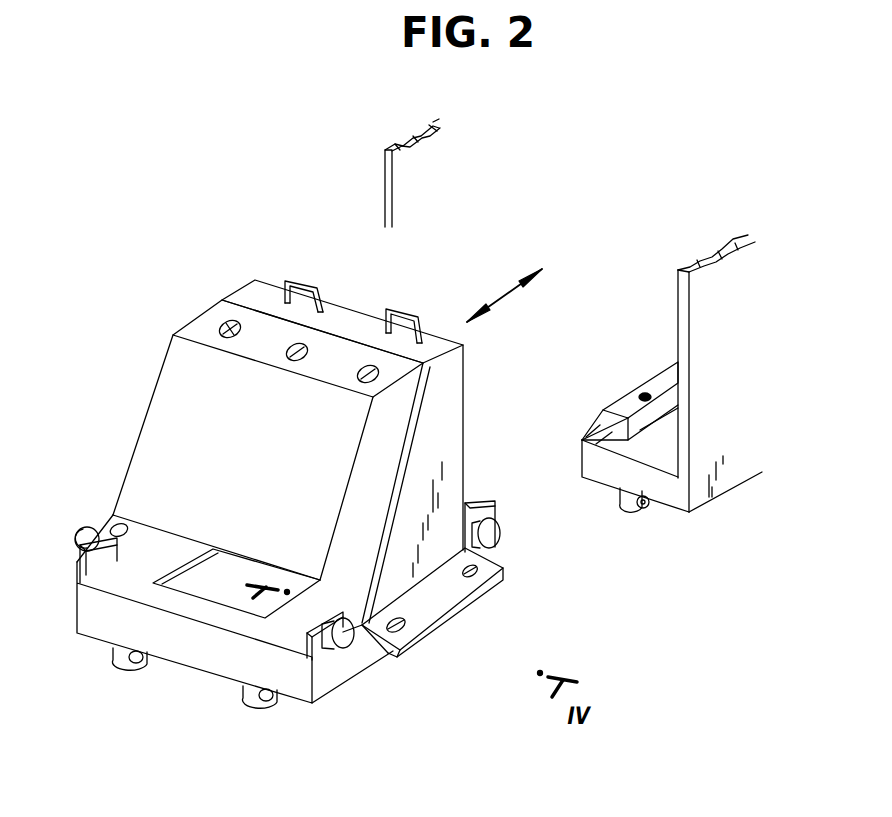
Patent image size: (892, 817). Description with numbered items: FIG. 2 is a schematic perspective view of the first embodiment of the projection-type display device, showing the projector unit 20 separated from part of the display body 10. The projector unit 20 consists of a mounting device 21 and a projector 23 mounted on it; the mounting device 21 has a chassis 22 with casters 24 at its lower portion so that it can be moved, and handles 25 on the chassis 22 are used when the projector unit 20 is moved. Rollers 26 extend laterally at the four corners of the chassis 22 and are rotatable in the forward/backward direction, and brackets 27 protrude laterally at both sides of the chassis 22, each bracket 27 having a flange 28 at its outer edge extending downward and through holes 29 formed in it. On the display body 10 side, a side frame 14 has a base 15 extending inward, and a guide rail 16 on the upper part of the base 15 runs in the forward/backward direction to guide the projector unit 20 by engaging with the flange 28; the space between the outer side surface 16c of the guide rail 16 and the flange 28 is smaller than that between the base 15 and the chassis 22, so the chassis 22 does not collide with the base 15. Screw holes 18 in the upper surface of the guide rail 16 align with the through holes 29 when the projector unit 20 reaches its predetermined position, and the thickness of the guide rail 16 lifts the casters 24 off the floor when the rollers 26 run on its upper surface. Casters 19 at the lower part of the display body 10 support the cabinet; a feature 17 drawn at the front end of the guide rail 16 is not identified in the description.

The display body 10 is at (353, 133).
The side frames 14 is at (715, 278).
The bases 15 is at (676, 505).
The guide rail 16 is at (626, 400).
The outer side surface of guide rail 16c is at (667, 414).
The guide bar bevels 17 is at (601, 427).
The screw holes 18 is at (643, 392).
The casters 19 is at (627, 509).
The projector unit 20 is at (141, 396).
The mounting device 21 is at (437, 463).
The chassis 22 is at (322, 688).
The projector 23 is at (225, 317).
The casters 24 is at (253, 694).
The handles 25 is at (399, 309).
The rollers 26 is at (347, 645).
The brackets 27 is at (466, 623).
The flange 28 is at (463, 606).
The through holes 29 is at (408, 622).